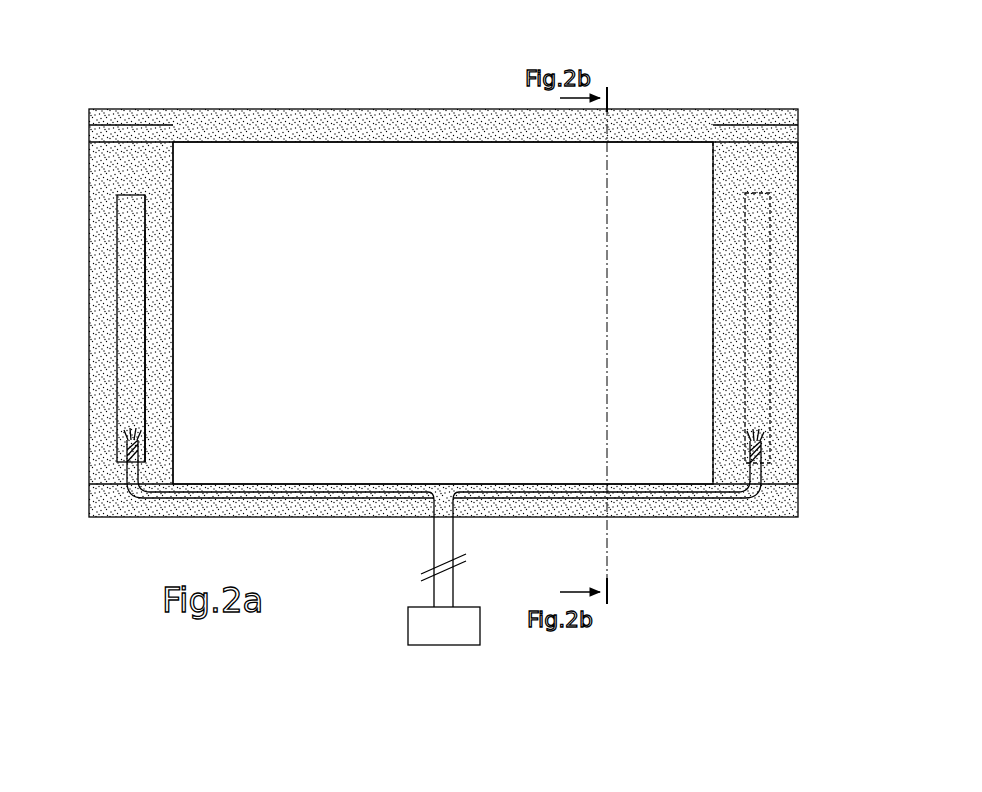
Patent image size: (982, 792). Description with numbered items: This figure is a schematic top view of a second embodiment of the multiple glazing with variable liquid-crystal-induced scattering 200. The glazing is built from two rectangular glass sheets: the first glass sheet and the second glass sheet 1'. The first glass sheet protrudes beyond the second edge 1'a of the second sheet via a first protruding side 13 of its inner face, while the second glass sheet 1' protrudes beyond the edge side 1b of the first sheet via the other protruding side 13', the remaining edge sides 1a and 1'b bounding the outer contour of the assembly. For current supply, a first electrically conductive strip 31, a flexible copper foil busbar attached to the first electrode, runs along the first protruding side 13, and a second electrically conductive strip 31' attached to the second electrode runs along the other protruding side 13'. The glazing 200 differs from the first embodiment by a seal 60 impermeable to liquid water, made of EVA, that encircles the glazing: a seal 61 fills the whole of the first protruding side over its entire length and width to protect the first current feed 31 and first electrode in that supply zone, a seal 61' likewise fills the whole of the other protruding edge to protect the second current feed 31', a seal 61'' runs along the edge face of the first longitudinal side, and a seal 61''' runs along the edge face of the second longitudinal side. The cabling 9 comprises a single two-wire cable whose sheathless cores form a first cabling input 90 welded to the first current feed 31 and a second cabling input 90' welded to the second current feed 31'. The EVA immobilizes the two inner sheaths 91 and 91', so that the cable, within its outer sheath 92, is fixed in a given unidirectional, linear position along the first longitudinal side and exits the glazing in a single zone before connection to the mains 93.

The multiple glazing with variable liquid-crystal-induced scattering 200 is at (628, 92).
The first edge 1a is at (89, 174).
The second edge 1'a is at (193, 277).
The first edge 1b is at (713, 156).
The second edge 1'b is at (836, 313).
The second glass sheet 1' is at (443, 273).
The first protruding side 13 is at (131, 99).
The other protruding side 13' is at (755, 99).
The seal 60 is at (158, 196).
The seal 61 is at (193, 346).
The seal 61' is at (781, 299).
The seal 61'' is at (443, 532).
The seal 61''' is at (443, 163).
The first electrically conductive strip 31 is at (85, 328).
The second electrically conductive strip 31' is at (810, 328).
The first cabling input 90 is at (83, 431).
The second cabling input 90' is at (808, 438).
The inner sheath 91 is at (262, 523).
The inner sheath 91' is at (619, 524).
The cabling 9 is at (468, 529).
The outer sheath 92 is at (438, 537).
The mains 93 is at (415, 628).